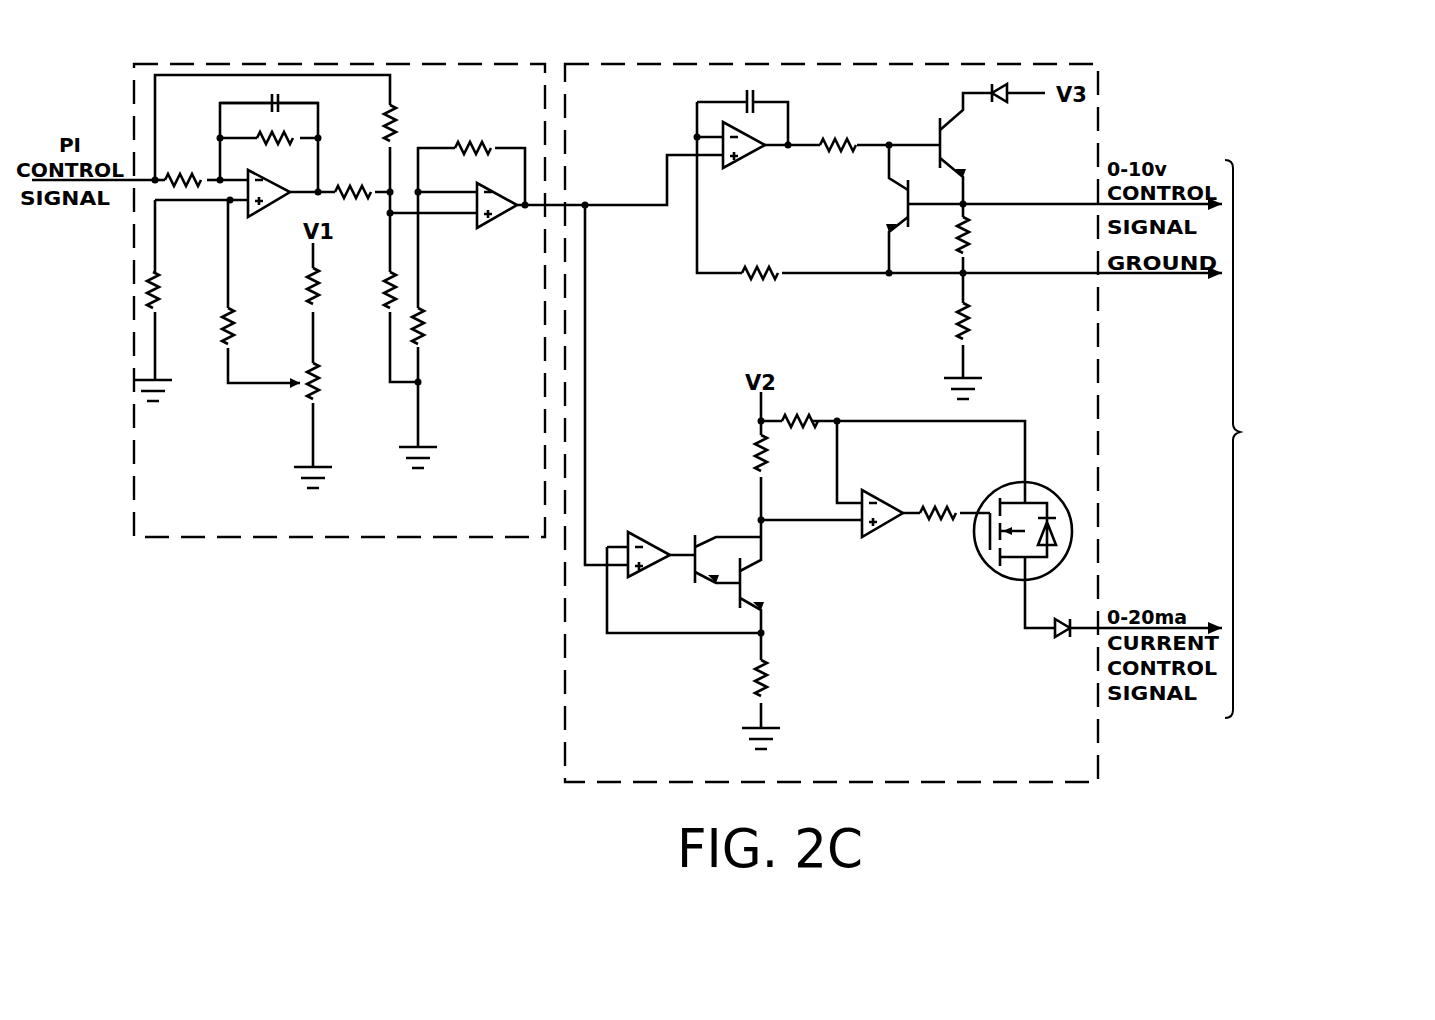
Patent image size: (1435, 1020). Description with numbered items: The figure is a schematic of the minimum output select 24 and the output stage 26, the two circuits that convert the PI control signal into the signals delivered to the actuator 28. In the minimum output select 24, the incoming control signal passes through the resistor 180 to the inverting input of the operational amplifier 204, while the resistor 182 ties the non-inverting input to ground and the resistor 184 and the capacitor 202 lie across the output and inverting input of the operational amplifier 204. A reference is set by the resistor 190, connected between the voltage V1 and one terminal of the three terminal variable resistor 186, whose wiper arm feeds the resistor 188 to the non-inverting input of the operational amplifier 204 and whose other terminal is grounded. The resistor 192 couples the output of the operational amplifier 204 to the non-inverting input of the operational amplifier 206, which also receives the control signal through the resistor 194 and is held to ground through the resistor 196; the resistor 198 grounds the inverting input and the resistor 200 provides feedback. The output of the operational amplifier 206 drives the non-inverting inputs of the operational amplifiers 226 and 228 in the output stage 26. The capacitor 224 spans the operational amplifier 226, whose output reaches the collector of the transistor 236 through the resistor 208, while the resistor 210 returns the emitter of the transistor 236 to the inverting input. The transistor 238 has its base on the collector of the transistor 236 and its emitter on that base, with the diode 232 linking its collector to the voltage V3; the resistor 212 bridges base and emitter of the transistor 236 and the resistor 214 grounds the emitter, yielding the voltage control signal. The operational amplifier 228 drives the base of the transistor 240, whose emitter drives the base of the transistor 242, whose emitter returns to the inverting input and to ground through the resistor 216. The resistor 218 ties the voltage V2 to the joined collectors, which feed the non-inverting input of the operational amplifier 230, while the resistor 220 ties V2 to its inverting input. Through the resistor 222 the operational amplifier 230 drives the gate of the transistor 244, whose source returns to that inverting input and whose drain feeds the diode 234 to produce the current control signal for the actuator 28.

The minimum output select 24 is at (524, 46).
The output stage 26 is at (1021, 47).
The actuator 28 is at (1315, 439).
The resistor 180 is at (190, 170).
The resistor 182 is at (160, 290).
The resistor 184 is at (270, 144).
The three terminal variable resistor 186 is at (306, 401).
The resistor 188 is at (233, 328).
The resistor 190 is at (308, 298).
The resistor 192 is at (354, 190).
The resistor 194 is at (398, 126).
The resistor 196 is at (383, 296).
The resistor 198 is at (425, 330).
The resistor 200 is at (478, 140).
The capacitor 202 is at (280, 100).
The operational amplifier 204 is at (282, 204).
The operational amplifier 206 is at (506, 222).
The resistor 208 is at (822, 140).
The resistor 210 is at (765, 268).
The resistor 212 is at (970, 233).
The resistor 214 is at (970, 320).
The resistor 216 is at (768, 678).
The resistor 218 is at (754, 462).
The resistor 220 is at (797, 418).
The resistor 222 is at (946, 506).
The capacitor 224 is at (758, 95).
The operational amplifier 226 is at (750, 163).
The operational amplifier 228 is at (654, 542).
The operational amplifier 230 is at (878, 528).
The diode 232 is at (1005, 100).
The diode 234 is at (1045, 640).
The transistor 236 is at (896, 199).
The transistor 238 is at (938, 130).
The transistor 240 is at (700, 540).
The transistor 242 is at (752, 568).
The transistor 244 is at (1030, 484).